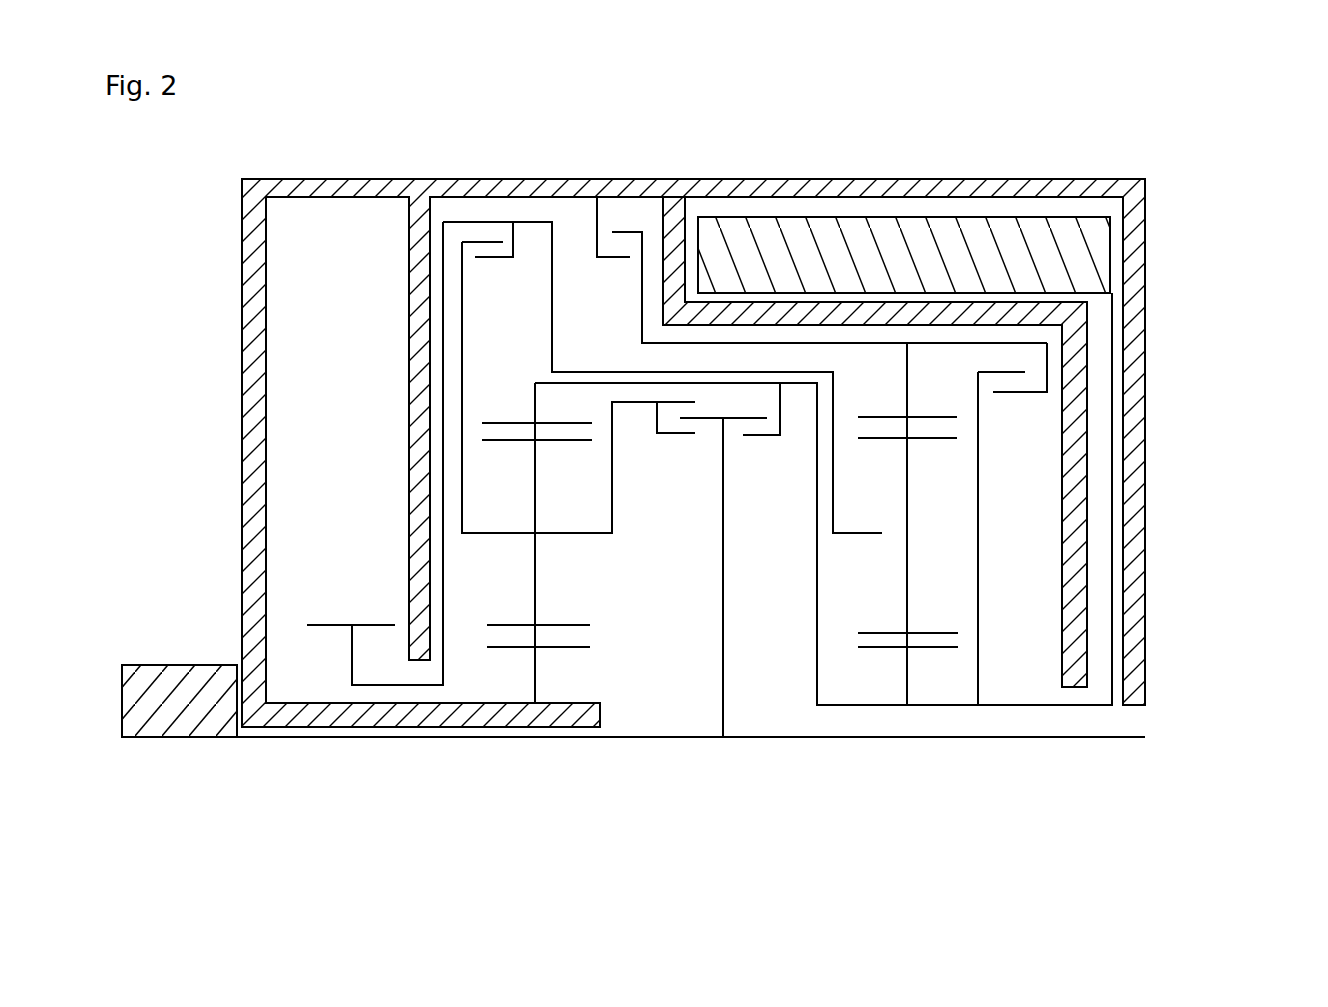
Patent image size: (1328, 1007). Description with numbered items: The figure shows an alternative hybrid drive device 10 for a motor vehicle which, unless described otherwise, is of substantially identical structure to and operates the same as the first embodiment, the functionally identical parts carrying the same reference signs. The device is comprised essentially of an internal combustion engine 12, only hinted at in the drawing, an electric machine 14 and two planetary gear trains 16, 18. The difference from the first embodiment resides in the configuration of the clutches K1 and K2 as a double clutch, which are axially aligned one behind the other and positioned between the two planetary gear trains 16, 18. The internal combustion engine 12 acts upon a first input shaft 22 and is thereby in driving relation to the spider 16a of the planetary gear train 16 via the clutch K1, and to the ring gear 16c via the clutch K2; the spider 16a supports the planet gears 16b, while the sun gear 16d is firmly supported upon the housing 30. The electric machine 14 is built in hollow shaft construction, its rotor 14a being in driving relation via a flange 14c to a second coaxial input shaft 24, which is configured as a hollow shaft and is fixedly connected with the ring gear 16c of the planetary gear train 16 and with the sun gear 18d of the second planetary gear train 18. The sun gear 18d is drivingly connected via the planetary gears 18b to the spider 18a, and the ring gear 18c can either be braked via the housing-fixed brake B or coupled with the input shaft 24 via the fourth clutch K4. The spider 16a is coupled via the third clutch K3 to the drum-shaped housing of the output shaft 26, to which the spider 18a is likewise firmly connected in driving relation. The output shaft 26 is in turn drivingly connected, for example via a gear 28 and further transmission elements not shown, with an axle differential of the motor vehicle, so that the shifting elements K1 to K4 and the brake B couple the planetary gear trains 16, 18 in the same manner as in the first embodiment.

The hybrid drive device 10 is at (743, 145).
The internal combustion engine 12 is at (160, 665).
The electric machine 14 is at (1044, 207).
The rotor 14a is at (1085, 293).
The flange 14c is at (1088, 385).
The planetary gear train 16 is at (352, 333).
The spider 16a is at (492, 533).
The planet gears 16b is at (535, 453).
The ring gear 16c is at (535, 398).
The sun gear 16d is at (537, 675).
The second planetary gear train 18 is at (1258, 440).
The spider 18a is at (882, 533).
The planetary gears 18b is at (908, 570).
The ring gear 18c is at (907, 383).
The sun gear 18d is at (908, 672).
The first input shaft 22 is at (383, 739).
The second input shaft 24 is at (1075, 705).
The output shaft 26 is at (430, 690).
The gear 28 is at (340, 625).
The housing 30 is at (240, 283).
The clutch K1 is at (680, 437).
The clutch K2 is at (758, 437).
The third clutch K3 is at (490, 240).
The fourth clutch K4 is at (1025, 372).
The brake B is at (635, 232).